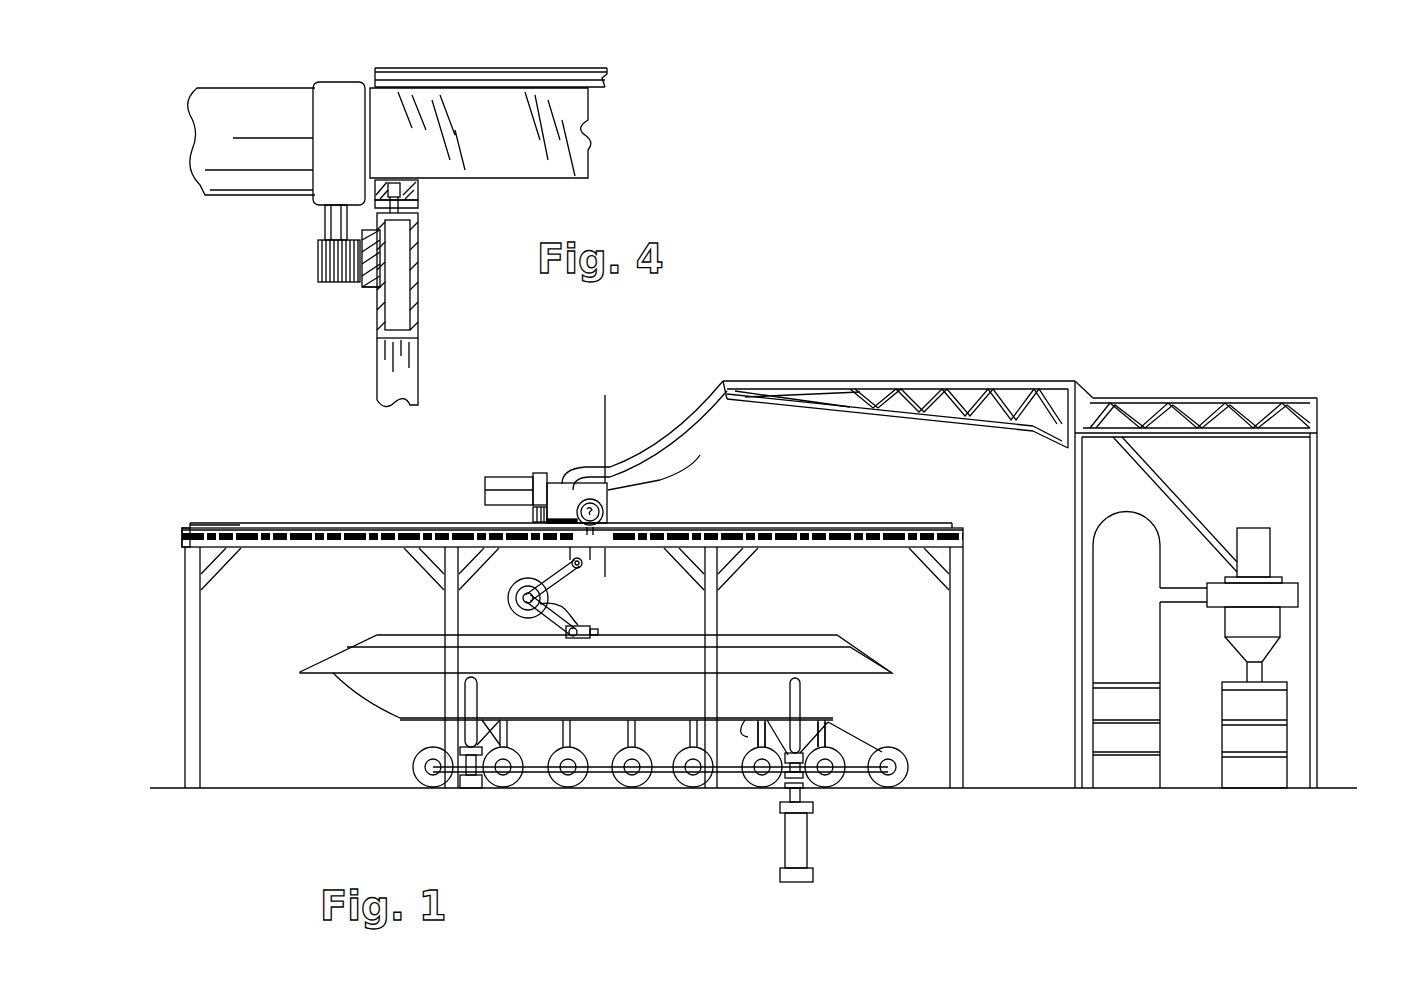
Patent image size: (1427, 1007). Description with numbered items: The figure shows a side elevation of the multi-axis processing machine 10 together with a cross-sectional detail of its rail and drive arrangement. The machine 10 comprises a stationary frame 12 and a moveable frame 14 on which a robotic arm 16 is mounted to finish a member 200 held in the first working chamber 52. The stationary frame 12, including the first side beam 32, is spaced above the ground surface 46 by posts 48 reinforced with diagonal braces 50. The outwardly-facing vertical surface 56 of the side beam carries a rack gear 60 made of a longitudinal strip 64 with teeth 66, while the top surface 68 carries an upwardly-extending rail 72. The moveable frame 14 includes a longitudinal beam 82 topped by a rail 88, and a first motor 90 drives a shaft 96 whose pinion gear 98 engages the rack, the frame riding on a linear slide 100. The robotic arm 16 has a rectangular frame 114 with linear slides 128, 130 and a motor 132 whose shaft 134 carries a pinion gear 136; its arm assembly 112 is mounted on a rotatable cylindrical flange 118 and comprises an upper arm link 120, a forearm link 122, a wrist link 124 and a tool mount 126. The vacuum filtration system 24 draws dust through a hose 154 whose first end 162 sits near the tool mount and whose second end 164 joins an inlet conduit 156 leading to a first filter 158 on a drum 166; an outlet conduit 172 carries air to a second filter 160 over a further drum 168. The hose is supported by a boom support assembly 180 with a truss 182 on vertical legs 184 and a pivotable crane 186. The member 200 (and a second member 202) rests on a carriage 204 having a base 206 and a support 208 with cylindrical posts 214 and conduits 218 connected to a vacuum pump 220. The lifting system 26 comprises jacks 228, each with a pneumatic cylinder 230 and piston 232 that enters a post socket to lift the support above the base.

In FIG. 1, the processing machine 10 is at (884, 282).
In FIG. 1, the stationary frame 12 is at (602, 667).
In FIG. 1, the moveable frame 14 is at (608, 480).
In FIG. 1, the robotic arm 16 is at (570, 599).
In FIG. 1, the vacuum filtration system 24 is at (1206, 589).
In FIG. 1, the lifting system 26 is at (777, 839).
In FIG. 4, the first side beam 32 is at (420, 270).
In FIG. 1, the first side beam 32 is at (264, 550).
In FIG. 1, the ground surface 46 is at (253, 782).
In FIG. 4, the posts 48 is at (420, 370).
In FIG. 1, the posts 48 is at (200, 660).
In FIG. 1, the diagonal braces 50 is at (222, 566).
In FIG. 1, the first working chamber 52 is at (836, 584).
In FIG. 1, the vertical surface 56 is at (183, 544).
In FIG. 1, the rack gear 60 is at (964, 537).
In FIG. 4, the longitudinal strip 64 is at (371, 288).
In FIG. 4, the teeth 66 is at (361, 284).
In FIG. 4, the top surface 68 is at (376, 182).
In FIG. 1, the top surface 68 is at (197, 522).
In FIG. 4, the rail 72 is at (414, 206).
In FIG. 1, the rail 72 is at (232, 522).
In FIG. 4, the second longitudinal beam 82 is at (565, 140).
In FIG. 4, the rail 88 is at (500, 68).
In FIG. 4, the first motor 90 is at (233, 83).
In FIG. 1, the first motor 90 is at (605, 518).
In FIG. 4, the shaft 96 is at (323, 220).
In FIG. 4, the pinion gear 98 is at (318, 258).
In FIG. 4, the linear slide 100 is at (420, 190).
In FIG. 1, the arm assembly 112 is at (544, 621).
In FIG. 1, the rectangular frame 114 is at (565, 507).
In FIG. 1, the cylindrical flange 118 is at (579, 570).
In FIG. 1, the upper arm link 120 is at (549, 584).
In FIG. 1, the forearm link 122 is at (522, 610).
In FIG. 1, the wrist link 124 is at (582, 636).
In FIG. 1, the tool mount 126 is at (598, 632).
In FIG. 1, the linear slide 128 is at (559, 505).
In FIG. 1, the linear slide 130 is at (606, 509).
In FIG. 1, the motor 132 is at (508, 474).
In FIG. 1, the shaft 134 is at (533, 515).
In FIG. 1, the pinion gear 136 is at (533, 521).
In FIG. 1, the hose 154 is at (875, 393).
In FIG. 1, the inlet conduit 156 is at (1249, 528).
In FIG. 1, the first filter 158 is at (1276, 546).
In FIG. 1, the second filter 160 is at (1122, 511).
In FIG. 1, the first end 162 is at (580, 624).
In FIG. 1, the second end 164 is at (1200, 532).
In FIG. 1, the drum 166 is at (1270, 752).
In FIG. 1, the drum 168 is at (1137, 772).
In FIG. 1, the outlet conduit 172 is at (1188, 598).
In FIG. 1, the boom support assembly 180 is at (1226, 390).
In FIG. 1, the truss 182 is at (1305, 417).
In FIG. 1, the vertical legs 184 is at (1318, 488).
In FIG. 1, the crane 186 is at (960, 405).
In FIG. 1, the first member 200 is at (883, 655).
In FIG. 1, the second member 202 is at (654, 777).
In FIG. 1, the carriage 204 is at (844, 713).
In FIG. 1, the base 206 is at (537, 773).
In FIG. 1, the support 208 is at (798, 697).
In FIG. 1, the cylindrical posts 214 is at (481, 721).
In FIG. 1, the conduits 218 is at (510, 735).
In FIG. 1, the vacuum pump 220 is at (783, 782).
In FIG. 1, the jacks 228 is at (770, 836).
In FIG. 1, the pneumatic cylinder 230 is at (790, 845).
In FIG. 1, the piston 232 is at (805, 793).